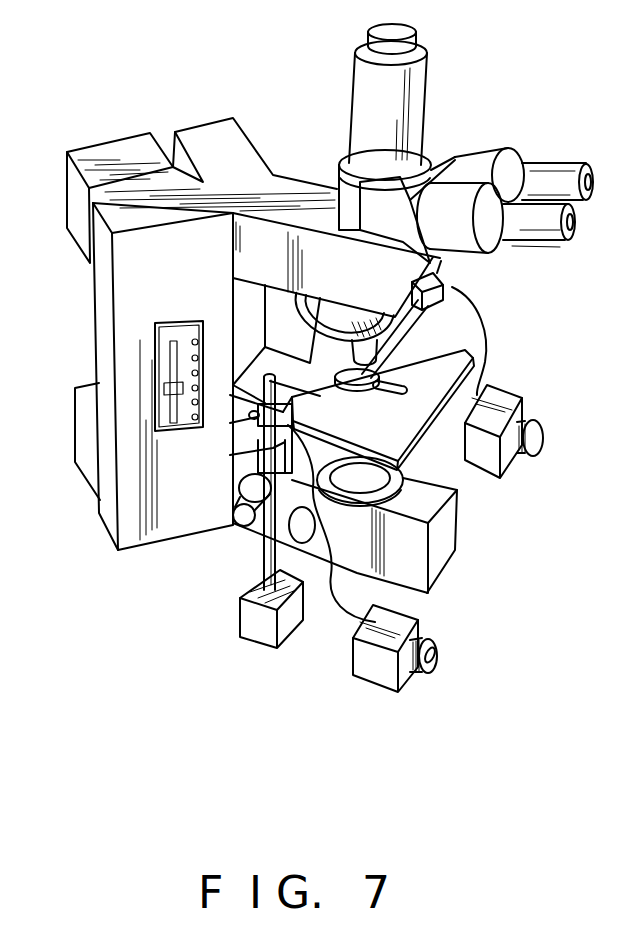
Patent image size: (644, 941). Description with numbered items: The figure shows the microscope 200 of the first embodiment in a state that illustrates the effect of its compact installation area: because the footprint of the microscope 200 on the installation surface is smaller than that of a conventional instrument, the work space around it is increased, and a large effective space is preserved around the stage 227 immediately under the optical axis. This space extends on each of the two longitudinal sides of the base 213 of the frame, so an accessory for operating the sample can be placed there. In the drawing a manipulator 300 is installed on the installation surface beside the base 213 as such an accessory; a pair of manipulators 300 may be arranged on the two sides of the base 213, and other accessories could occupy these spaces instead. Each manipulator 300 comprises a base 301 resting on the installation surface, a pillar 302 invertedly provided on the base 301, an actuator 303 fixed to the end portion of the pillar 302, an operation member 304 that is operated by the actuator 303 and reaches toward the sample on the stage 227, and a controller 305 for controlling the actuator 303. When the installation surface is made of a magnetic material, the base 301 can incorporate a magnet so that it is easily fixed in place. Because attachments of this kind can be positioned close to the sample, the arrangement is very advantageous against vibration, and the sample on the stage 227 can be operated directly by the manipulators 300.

The microscope 200 is at (261, 158).
The base 213 is at (415, 570).
The stage 227 is at (455, 351).
The manipulator 300 is at (450, 285).
The base 301 is at (256, 636).
The pillar 302 is at (277, 556).
The actuator 303 is at (291, 412).
The operation member 304 is at (303, 405).
The controller 305 is at (375, 676).